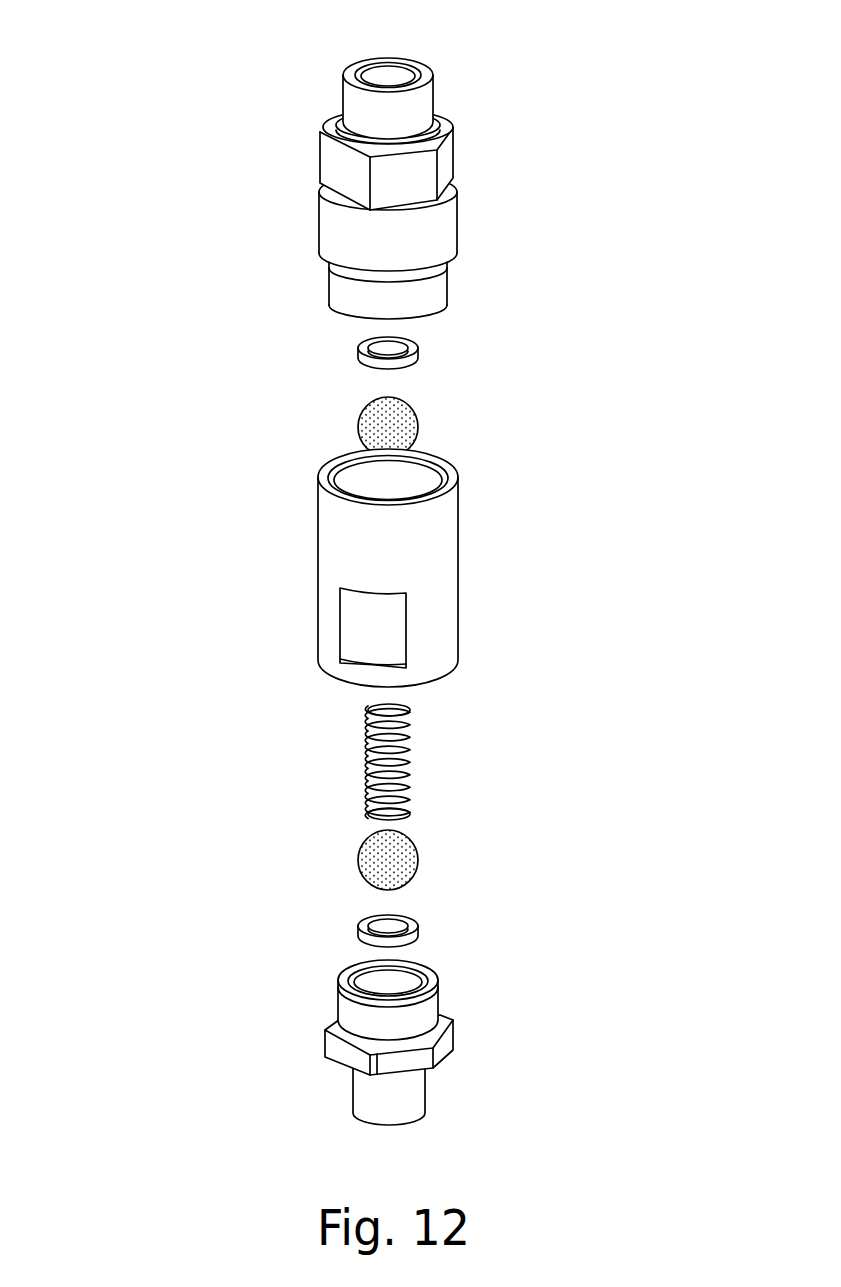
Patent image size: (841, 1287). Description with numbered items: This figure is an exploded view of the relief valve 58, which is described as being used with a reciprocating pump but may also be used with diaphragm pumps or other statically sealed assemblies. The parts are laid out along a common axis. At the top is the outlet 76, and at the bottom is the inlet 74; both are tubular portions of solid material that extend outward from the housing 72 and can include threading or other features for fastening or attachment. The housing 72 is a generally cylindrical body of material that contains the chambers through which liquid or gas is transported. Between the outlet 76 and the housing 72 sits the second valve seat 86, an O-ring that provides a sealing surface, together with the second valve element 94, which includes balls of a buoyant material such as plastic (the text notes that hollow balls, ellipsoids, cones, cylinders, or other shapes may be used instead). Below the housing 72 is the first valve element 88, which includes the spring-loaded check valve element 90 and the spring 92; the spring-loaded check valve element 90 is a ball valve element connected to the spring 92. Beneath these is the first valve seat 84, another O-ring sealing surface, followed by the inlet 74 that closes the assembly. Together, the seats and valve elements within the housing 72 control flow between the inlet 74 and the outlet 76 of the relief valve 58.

The relief valve 58 is at (124, 77).
The housing 72 is at (315, 560).
The inlet 74 is at (425, 1092).
The outlet 76 is at (437, 102).
The first valve seat 84 is at (419, 929).
The second valve seat 86 is at (418, 353).
The first valve element 88 is at (371, 797).
The spring-loaded check valve element 90 is at (419, 854).
The spring 92 is at (410, 753).
The second valve element 94 is at (354, 424).